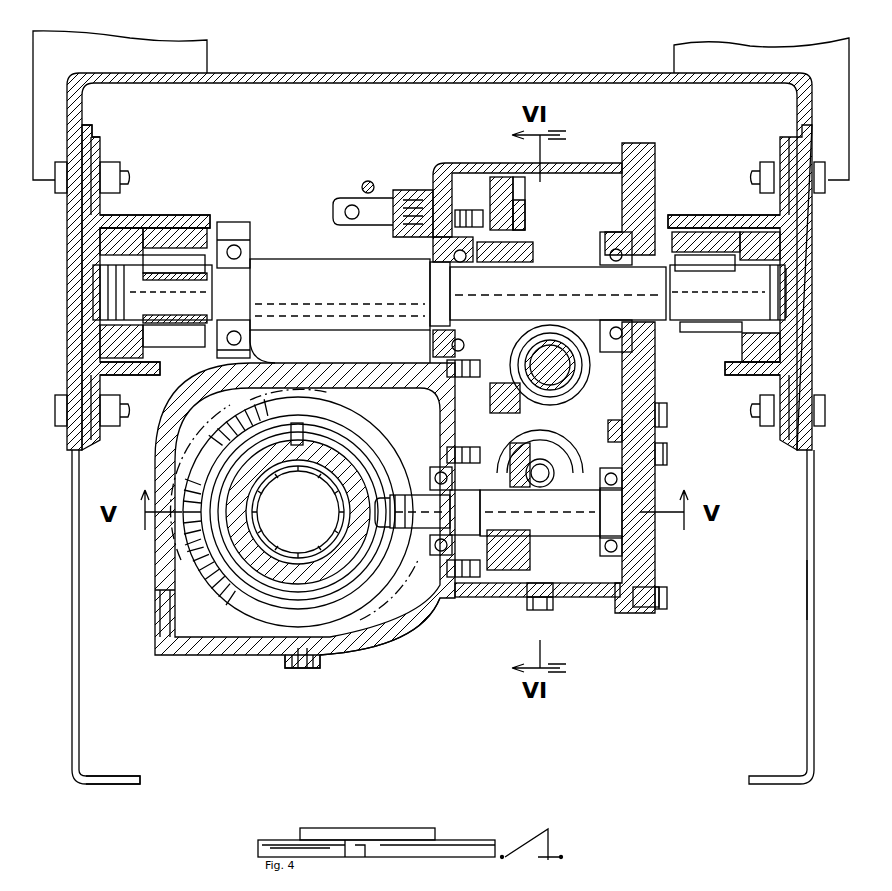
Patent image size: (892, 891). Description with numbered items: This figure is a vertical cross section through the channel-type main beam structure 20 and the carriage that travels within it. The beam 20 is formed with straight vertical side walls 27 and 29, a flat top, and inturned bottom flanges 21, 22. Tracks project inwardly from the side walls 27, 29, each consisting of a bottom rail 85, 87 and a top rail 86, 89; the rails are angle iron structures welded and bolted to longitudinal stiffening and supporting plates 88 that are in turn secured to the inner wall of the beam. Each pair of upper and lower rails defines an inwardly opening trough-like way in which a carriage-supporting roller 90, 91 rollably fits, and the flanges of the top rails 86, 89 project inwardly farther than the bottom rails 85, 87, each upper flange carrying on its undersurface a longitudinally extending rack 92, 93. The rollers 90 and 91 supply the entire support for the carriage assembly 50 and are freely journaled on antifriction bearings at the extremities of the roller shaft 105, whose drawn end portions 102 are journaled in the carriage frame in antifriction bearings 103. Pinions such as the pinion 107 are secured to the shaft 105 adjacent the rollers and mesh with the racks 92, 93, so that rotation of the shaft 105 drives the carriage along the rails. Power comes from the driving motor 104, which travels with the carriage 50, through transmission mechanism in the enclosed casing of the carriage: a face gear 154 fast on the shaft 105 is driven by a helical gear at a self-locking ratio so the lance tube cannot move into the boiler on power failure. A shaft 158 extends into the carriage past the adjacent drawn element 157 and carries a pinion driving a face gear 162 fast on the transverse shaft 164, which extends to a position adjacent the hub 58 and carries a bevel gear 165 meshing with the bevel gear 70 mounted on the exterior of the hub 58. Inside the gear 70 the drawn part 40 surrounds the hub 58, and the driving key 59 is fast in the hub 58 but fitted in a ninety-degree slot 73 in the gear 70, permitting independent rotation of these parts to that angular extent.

The main beam structure 20 is at (394, 64).
The inturned bottom flange 21 is at (690, 50).
The inturned bottom flange 22 is at (126, 781).
The side wall of beam 27 is at (827, 606).
The side wall of beam 29 is at (72, 490).
The gear hub 40 is at (298, 512).
The carriage assembly 50 is at (390, 650).
The hub 58 is at (351, 520).
The driving key 59 is at (292, 423).
The bevel gear 70 is at (262, 640).
The slot 73 is at (354, 429).
The bottom rail 85 is at (739, 376).
The top rail 86 is at (753, 215).
The bottom rail 87 is at (128, 372).
The stiffening and supporting plate 88 is at (84, 222).
The top rail 89 is at (130, 216).
The carriage-supporting roller 90 is at (790, 250).
The carriage-supporting roller 91 is at (92, 250).
The rack 92 is at (680, 232).
The rack 93 is at (200, 228).
The stub shaft 102 is at (132, 283).
The antifriction bearing 103 is at (250, 258).
The driving motor 104 is at (720, 330).
The roller shaft 105 is at (350, 294).
The pinion 107 is at (162, 342).
The face gear 154 is at (532, 183).
The splined hub 157 is at (570, 383).
The shaft 158 is at (530, 466).
The face gear 162 is at (532, 569).
The transverse shaft 164 is at (498, 511).
The bevel gear 165 is at (439, 610).